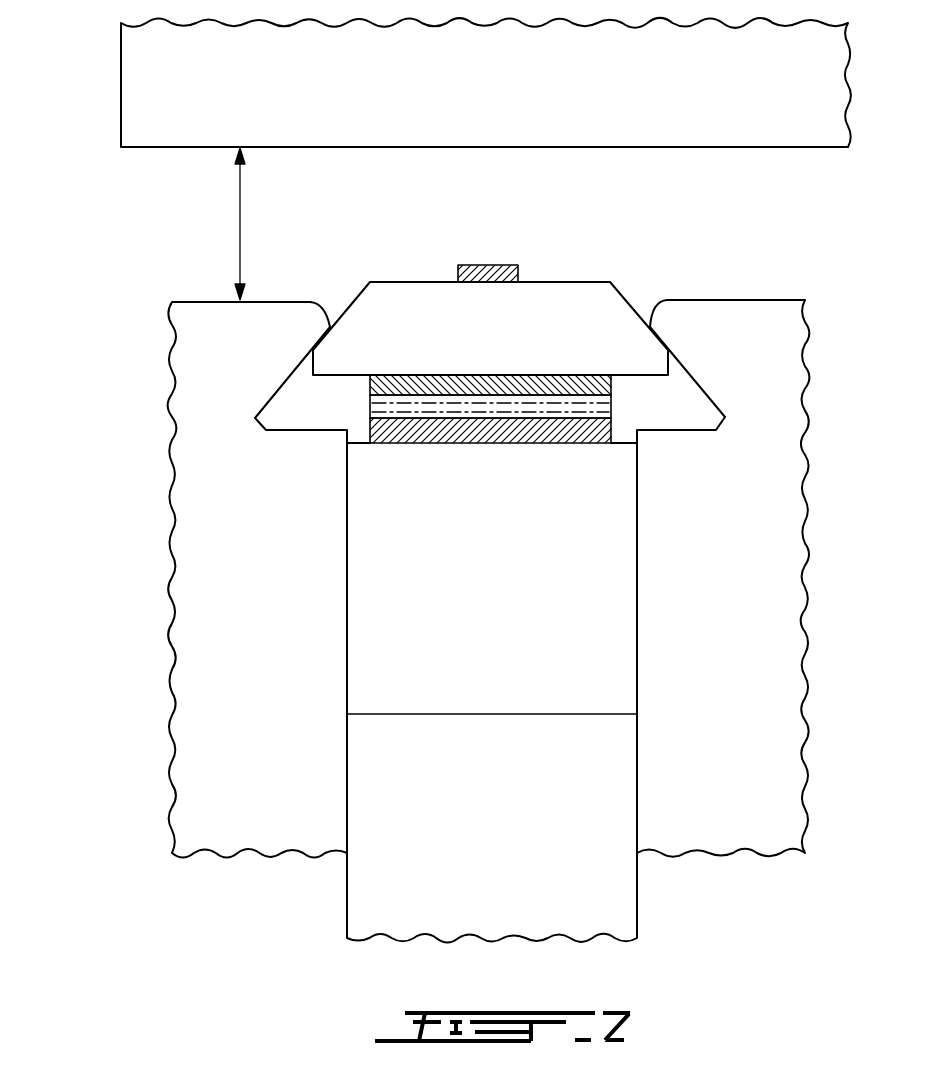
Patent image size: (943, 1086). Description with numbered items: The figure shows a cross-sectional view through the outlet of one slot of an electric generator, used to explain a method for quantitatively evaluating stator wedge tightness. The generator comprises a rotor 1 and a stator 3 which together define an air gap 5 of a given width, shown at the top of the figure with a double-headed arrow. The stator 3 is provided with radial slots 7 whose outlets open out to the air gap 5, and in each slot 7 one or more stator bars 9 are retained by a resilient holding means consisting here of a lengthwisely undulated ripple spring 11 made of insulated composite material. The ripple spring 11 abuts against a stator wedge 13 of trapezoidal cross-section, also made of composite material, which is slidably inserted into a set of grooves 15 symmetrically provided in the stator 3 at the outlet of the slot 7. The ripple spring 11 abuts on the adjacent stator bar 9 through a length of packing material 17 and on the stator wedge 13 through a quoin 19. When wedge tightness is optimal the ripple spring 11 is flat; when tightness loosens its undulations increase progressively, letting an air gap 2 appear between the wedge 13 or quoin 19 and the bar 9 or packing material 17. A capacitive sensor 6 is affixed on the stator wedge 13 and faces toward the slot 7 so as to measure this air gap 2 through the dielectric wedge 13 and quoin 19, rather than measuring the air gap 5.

The rotor 1 is at (180, 99).
The air gap 2 is at (370, 410).
The stator 3 is at (728, 646).
The air gap 5 is at (240, 224).
The capacitive sensor 6 is at (478, 265).
The radial slot 7 is at (348, 682).
The stator bar 9 is at (600, 687).
The ripple spring 11 is at (483, 408).
The stator wedge 13 is at (668, 348).
The grooves 15 is at (255, 418).
The packing material 17 is at (567, 445).
The quoin 19 is at (611, 383).